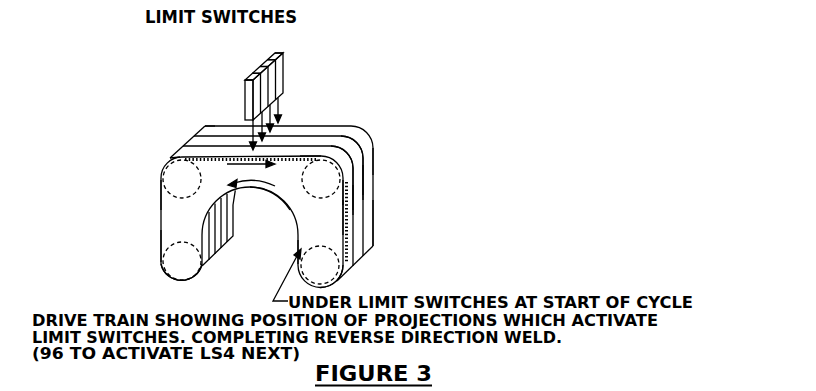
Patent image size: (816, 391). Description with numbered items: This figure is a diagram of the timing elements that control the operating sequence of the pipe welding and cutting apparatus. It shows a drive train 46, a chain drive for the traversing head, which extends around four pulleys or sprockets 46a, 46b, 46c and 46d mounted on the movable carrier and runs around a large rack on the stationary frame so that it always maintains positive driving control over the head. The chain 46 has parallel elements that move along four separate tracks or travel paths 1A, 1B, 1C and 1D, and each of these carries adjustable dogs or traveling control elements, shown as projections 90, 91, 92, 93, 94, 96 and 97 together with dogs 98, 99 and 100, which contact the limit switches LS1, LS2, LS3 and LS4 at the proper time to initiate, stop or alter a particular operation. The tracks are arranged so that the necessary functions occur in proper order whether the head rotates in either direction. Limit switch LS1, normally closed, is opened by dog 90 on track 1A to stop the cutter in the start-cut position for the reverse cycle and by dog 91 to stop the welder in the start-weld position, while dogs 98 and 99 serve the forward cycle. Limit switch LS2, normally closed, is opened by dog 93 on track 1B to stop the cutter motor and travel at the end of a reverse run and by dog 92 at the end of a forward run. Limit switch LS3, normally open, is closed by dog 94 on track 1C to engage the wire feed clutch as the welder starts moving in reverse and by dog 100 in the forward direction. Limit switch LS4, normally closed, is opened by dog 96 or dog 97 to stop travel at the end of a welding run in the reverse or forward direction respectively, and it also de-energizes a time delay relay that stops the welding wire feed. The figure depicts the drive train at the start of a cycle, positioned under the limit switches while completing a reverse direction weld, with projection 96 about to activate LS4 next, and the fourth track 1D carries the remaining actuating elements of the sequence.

The limit switch LS-4 LS4 is at (222, 49).
The limit switch LS-3 LS3 is at (217, 61).
The limit switch LS-2 LS2 is at (212, 75).
The limit switch LS-1 LS1 is at (207, 89).
The dog 96 is at (188, 122).
The dog 98 is at (155, 155).
The drive train 46 is at (152, 241).
The pulley or sprocket 46a is at (198, 247).
The pulley or sprocket 46b is at (156, 195).
The pulley or sprocket 46c is at (292, 200).
The pulley or sprocket 46d is at (295, 244).
The dog 91 is at (324, 203).
The dog 99 is at (318, 127).
The dog 92 is at (349, 134).
The dog 94 is at (369, 125).
The dog 100 is at (389, 157).
The dog 93 is at (380, 173).
The dog 97 is at (389, 228).
The dog 90 is at (352, 278).
The track 1D is at (382, 160).
The track 1C is at (373, 178).
The track 1B is at (364, 196).
The track 1A is at (355, 215).